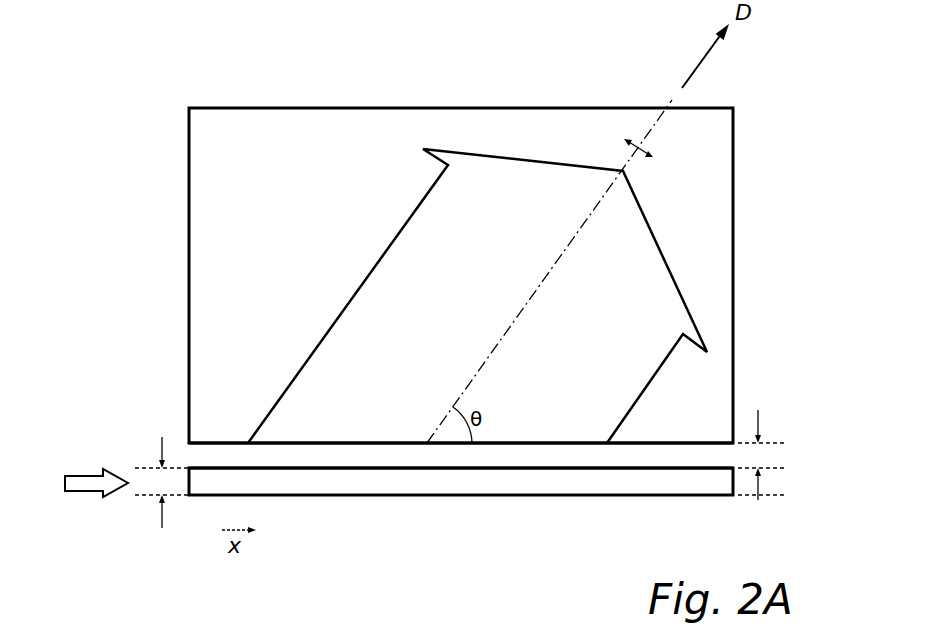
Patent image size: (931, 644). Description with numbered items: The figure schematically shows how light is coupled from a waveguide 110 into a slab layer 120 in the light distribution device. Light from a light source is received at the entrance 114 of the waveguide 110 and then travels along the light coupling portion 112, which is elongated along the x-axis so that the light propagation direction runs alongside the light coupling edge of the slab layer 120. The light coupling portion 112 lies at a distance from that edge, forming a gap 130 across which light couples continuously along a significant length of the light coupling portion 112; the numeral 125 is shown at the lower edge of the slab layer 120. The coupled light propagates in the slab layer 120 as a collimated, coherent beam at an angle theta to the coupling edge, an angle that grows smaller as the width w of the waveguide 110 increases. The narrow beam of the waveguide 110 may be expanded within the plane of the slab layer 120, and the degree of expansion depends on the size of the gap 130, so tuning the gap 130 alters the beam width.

The waveguide 110 is at (558, 496).
The light coupling portion 112 is at (403, 484).
The entrance 114 is at (188, 480).
The slab layer 120 is at (708, 209).
The bottom surface of optical element 125 is at (212, 442).
The gap 130 is at (722, 455).